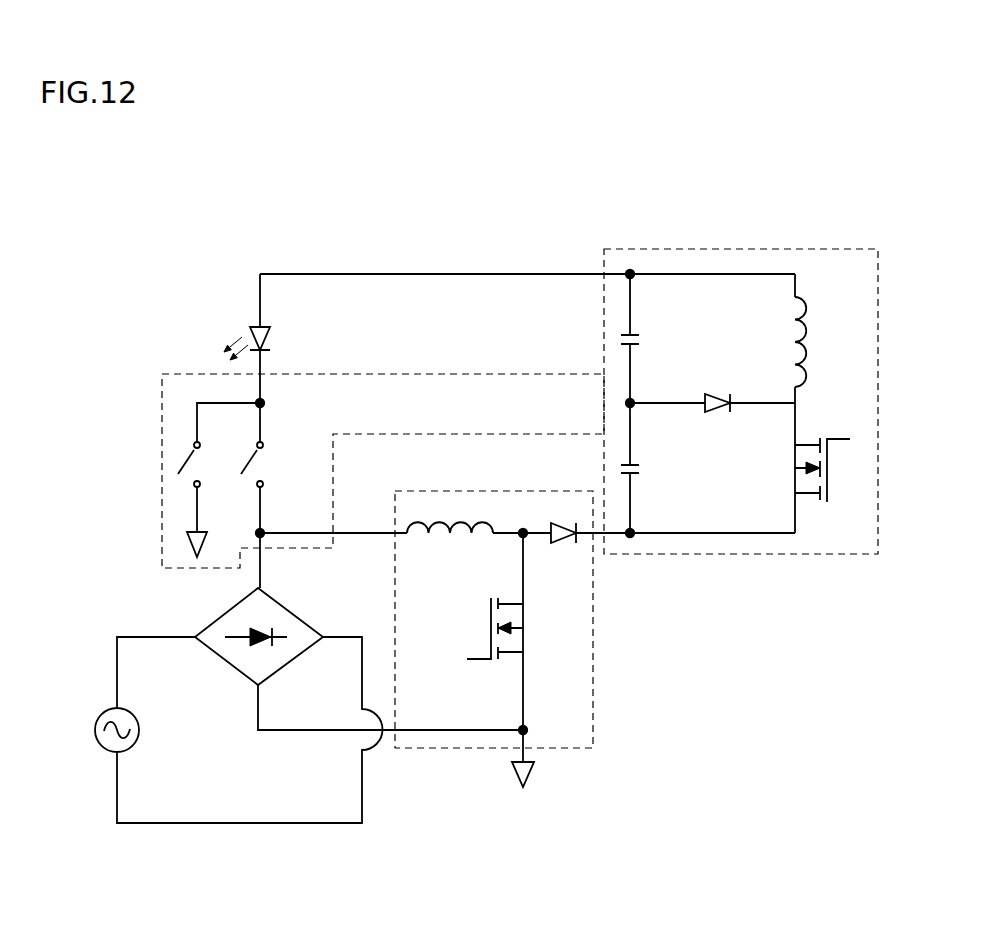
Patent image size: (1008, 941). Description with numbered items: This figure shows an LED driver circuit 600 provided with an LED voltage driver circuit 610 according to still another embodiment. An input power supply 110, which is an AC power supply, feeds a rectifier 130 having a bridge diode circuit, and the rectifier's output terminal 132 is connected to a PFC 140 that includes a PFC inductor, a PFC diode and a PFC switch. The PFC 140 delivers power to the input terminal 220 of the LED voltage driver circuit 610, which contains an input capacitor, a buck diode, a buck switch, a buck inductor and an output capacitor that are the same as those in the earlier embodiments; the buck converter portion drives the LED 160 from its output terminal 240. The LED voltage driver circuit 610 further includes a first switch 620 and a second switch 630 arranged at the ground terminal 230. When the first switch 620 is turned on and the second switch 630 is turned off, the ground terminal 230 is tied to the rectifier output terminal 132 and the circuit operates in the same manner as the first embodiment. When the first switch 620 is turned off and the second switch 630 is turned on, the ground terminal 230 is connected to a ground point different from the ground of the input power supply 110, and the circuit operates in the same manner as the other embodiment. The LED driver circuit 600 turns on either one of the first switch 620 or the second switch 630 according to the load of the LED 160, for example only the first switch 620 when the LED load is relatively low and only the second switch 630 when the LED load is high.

The input power supply 110 is at (103, 708).
The rectifier 130 is at (207, 623).
The output terminal of a rectifier 132 is at (262, 530).
The PFC 140 is at (593, 708).
The LED 160 is at (243, 318).
The input terminal 220 is at (630, 538).
The ground terminal 230 is at (262, 407).
The output terminal 240 is at (630, 262).
The LED driver circuit 600 is at (161, 185).
The LED voltage driver circuit 610 is at (727, 249).
The first switch 620 is at (247, 457).
The second switch 630 is at (182, 460).